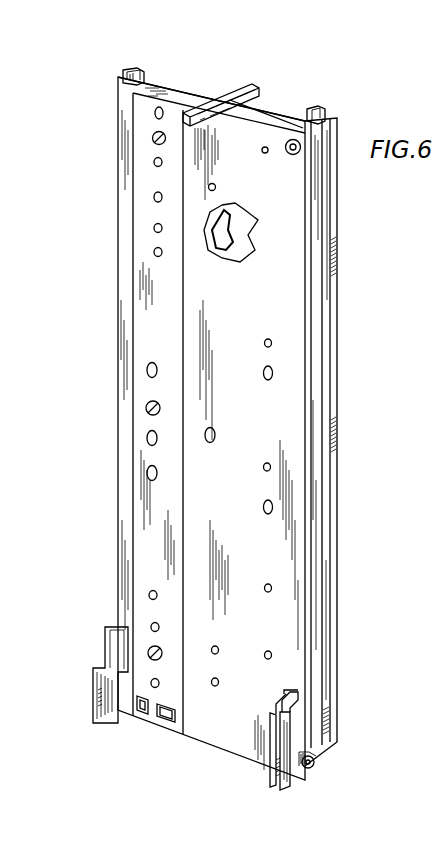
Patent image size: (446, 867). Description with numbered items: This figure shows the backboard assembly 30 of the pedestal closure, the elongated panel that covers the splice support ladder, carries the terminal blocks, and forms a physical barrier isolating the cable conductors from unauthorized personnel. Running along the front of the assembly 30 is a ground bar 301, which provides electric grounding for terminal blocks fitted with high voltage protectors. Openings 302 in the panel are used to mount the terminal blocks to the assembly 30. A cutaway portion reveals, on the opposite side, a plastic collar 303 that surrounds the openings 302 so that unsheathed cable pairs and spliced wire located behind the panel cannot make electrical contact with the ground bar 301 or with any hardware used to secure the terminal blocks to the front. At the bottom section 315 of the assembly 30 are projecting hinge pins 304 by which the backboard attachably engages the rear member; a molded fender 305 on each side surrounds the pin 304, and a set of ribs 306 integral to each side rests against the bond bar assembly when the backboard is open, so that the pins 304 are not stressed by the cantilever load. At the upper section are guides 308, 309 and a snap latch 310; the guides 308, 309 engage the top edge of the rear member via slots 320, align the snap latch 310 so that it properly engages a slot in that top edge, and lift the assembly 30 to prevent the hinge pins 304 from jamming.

The backboard assembly 30 is at (312, 94).
The ground bar 301 is at (149, 277).
The openings 302 is at (220, 187).
The plastic collar 303 is at (220, 251).
The hinge pin 304 is at (315, 759).
The molded fender 305 is at (290, 786).
The ribs 306 is at (298, 697).
The guide 308 is at (127, 64).
The guide 309 is at (317, 109).
The snap latch 310 is at (230, 92).
The bottom section 315 is at (326, 652).
The slots 320 is at (149, 72).